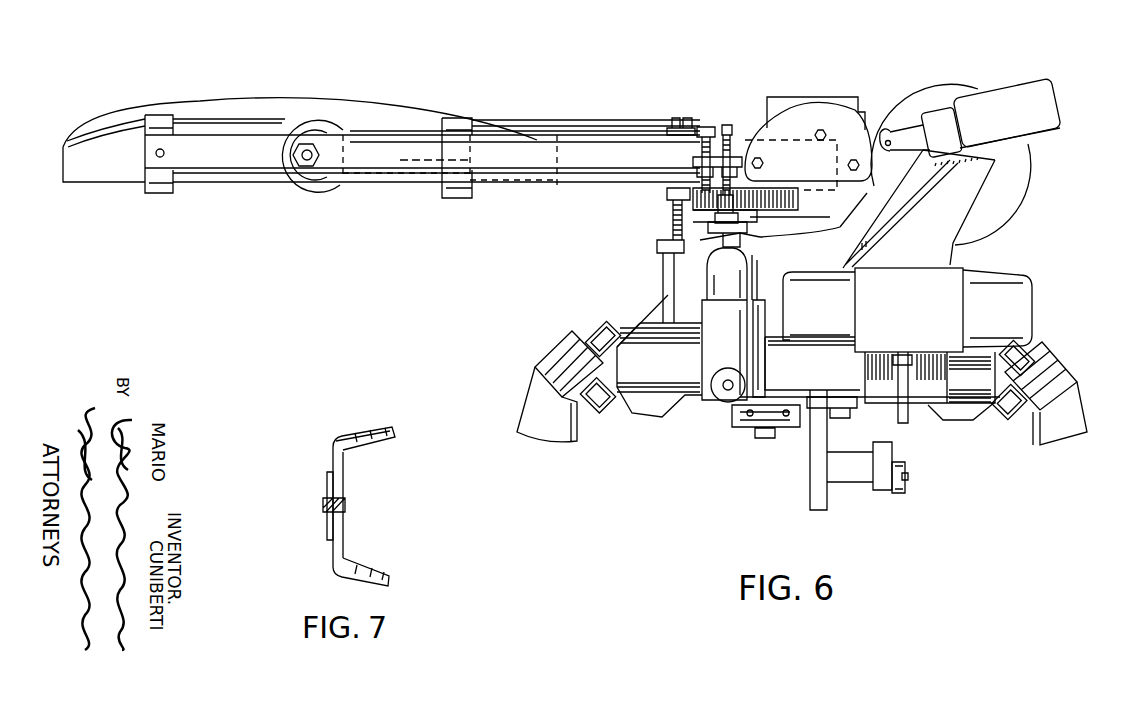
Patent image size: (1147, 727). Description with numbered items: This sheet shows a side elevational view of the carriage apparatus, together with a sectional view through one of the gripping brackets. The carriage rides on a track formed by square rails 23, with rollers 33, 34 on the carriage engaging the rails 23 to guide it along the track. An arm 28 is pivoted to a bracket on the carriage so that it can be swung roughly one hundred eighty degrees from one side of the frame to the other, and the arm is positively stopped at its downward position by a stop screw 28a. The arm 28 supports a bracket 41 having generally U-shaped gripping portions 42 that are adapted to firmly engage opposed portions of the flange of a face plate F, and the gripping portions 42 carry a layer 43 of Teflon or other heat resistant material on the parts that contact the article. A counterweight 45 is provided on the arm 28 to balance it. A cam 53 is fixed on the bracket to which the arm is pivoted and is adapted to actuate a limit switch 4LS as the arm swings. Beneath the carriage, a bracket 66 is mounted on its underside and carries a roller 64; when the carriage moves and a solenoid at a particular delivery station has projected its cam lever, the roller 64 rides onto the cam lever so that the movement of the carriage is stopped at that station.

In FIG. 6, the face plate F is at (105, 140).
In FIG. 6, the arm 28 is at (580, 168).
In FIG. 6, the stop screw 28a is at (660, 243).
In FIG. 6, the bracket 41 is at (243, 150).
In FIG. 7, the bracket 41 is at (327, 533).
In FIG. 6, the gripping portion 42 is at (168, 127).
In FIG. 7, the gripping portion 42 is at (333, 453).
In FIG. 7, the layer of heat resistant material 43 is at (367, 447).
In FIG. 6, the cam 53 is at (820, 110).
In FIG. 6, the counterweight 45 is at (915, 104).
In FIG. 6, the limit switch 4LS is at (1011, 101).
In FIG. 6, the square rail 23 is at (558, 355).
In FIG. 6, the roller 33 is at (608, 327).
In FIG. 6, the roller 34 is at (600, 412).
In FIG. 6, the bracket 66 is at (880, 488).
In FIG. 6, the roller 64 is at (897, 493).